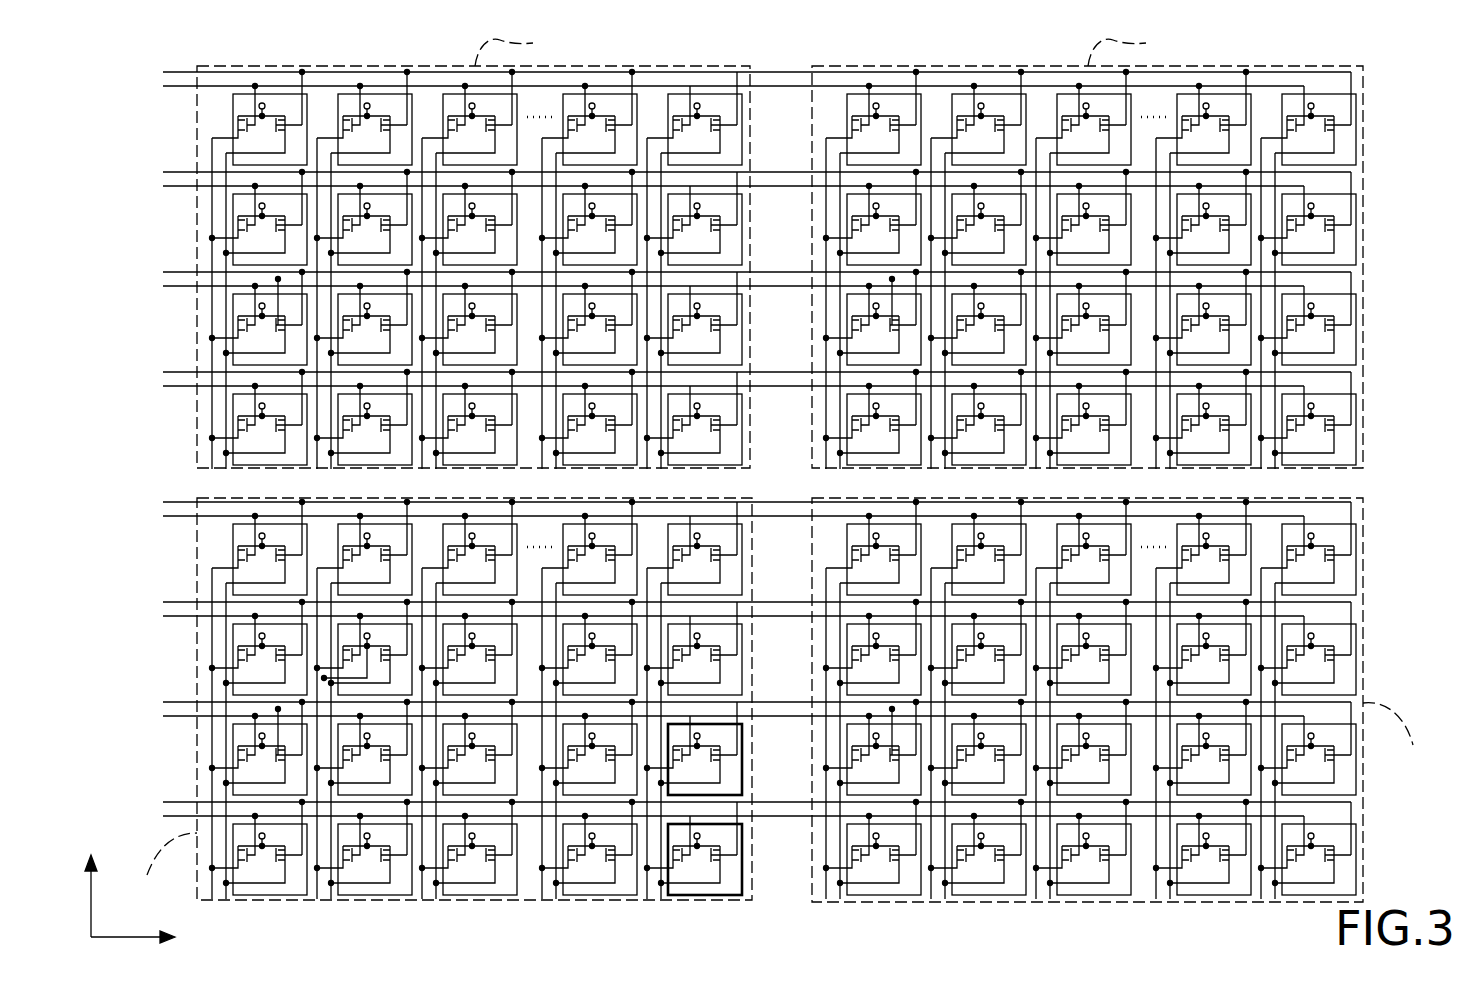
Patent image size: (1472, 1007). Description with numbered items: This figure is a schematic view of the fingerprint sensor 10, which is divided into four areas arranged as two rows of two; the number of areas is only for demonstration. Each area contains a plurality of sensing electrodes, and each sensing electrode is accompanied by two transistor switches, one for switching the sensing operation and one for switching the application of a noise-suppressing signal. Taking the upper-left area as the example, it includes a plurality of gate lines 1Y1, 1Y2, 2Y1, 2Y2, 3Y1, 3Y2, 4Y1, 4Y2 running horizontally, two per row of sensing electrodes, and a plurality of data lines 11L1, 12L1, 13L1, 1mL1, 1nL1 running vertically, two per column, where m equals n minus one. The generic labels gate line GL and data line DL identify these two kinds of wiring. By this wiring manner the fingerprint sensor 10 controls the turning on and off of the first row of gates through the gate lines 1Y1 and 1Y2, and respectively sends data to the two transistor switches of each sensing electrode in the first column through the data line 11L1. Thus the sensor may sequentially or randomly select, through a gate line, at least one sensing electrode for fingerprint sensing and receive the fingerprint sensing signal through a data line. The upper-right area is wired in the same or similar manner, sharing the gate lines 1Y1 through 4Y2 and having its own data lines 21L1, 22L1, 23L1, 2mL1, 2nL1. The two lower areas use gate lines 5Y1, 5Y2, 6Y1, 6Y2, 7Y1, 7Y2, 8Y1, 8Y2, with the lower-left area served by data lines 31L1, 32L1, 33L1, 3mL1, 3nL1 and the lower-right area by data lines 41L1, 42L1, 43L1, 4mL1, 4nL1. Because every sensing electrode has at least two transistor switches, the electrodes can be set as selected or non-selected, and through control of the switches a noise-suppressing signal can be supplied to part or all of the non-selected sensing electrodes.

The fingerprint sensor 10 is at (761, 491).
The gate line 1Y1 is at (735, 68).
The gate line 1Y2 is at (712, 87).
The gate line 2Y1 is at (735, 168).
The gate line 2Y2 is at (712, 187).
The gate line 3Y1 is at (735, 268).
The gate line 3Y2 is at (712, 287).
The gate line 4Y1 is at (735, 368).
The gate line 4Y2 is at (712, 387).
The gate line 5Y1 is at (735, 498).
The gate line 5Y2 is at (712, 517).
The gate line 6Y1 is at (735, 598).
The gate line 6Y2 is at (712, 617).
The gate line 7Y1 is at (735, 698).
The gate line 7Y2 is at (712, 717).
The gate line 8Y1 is at (735, 798).
The gate line 8Y2 is at (712, 817).
The gate line GL is at (121, 564).
The data line DL is at (485, 940).
The data line 11L1 is at (220, 312).
The data line 12L1 is at (325, 312).
The data line 13L1 is at (430, 312).
The data line 1mL1 is at (550, 312).
The data line 1nL1 is at (662, 312).
The data line 21L1 is at (834, 312).
The data line 22L1 is at (939, 312).
The data line 23L1 is at (1044, 312).
The data line 2mL1 is at (1164, 312).
The data line 2nL1 is at (1276, 312).
The data line 31L1 is at (220, 747).
The data line 32L1 is at (325, 747).
The data line 33L1 is at (430, 747).
The data line 3mL1 is at (550, 747).
The data line 3nL1 is at (662, 747).
The data line 41L1 is at (834, 747).
The data line 42L1 is at (939, 747).
The data line 43L1 is at (1044, 747).
The data line 4mL1 is at (1164, 747).
The data line 4nL1 is at (1276, 747).